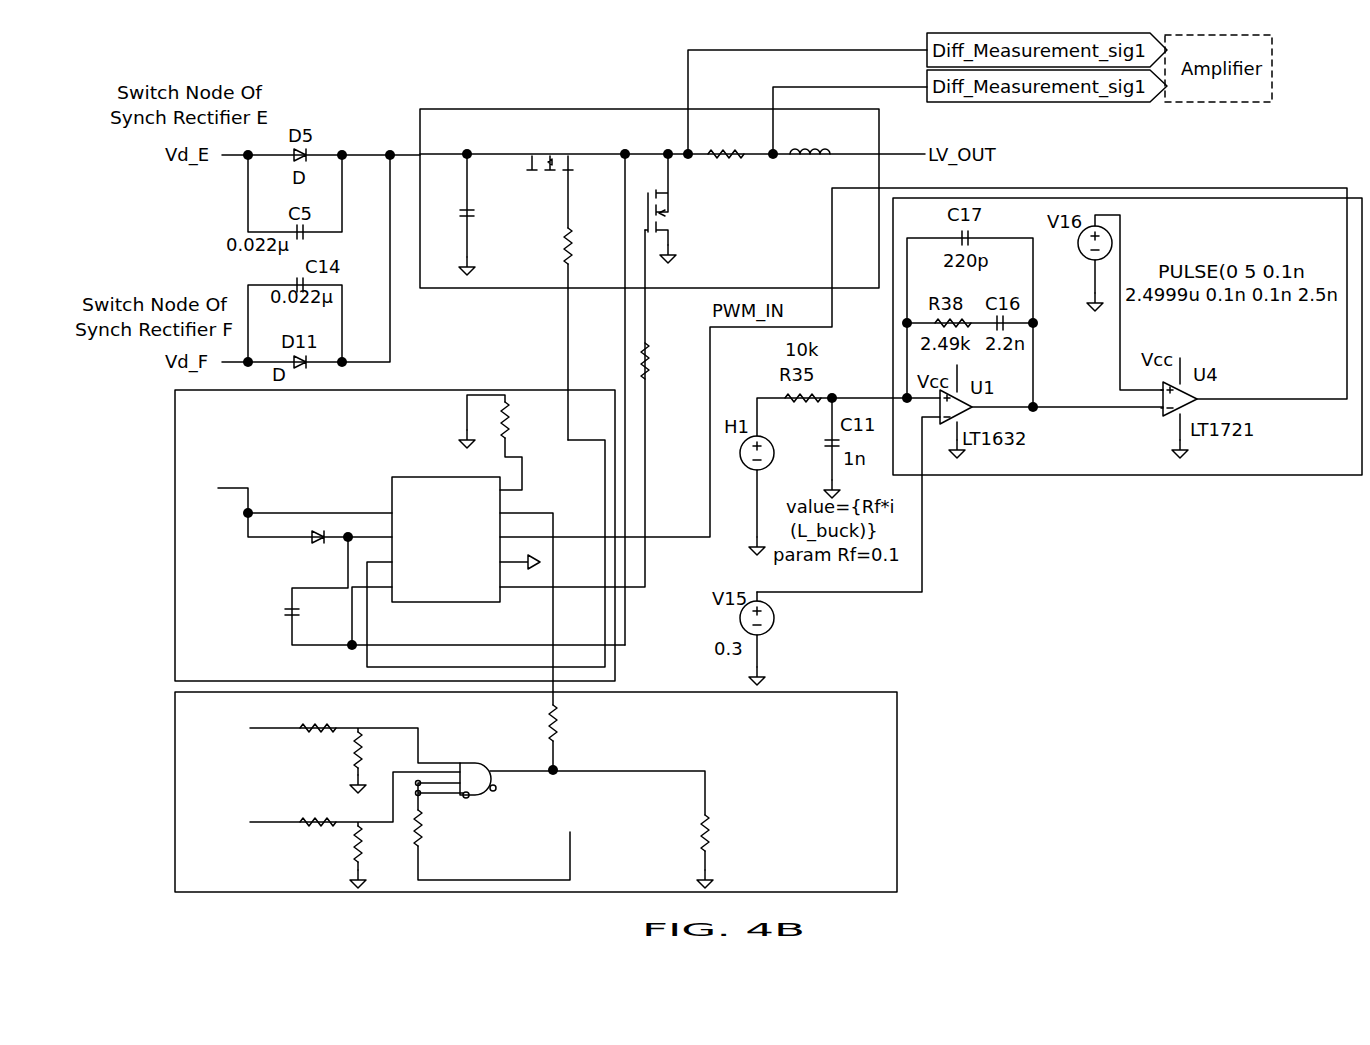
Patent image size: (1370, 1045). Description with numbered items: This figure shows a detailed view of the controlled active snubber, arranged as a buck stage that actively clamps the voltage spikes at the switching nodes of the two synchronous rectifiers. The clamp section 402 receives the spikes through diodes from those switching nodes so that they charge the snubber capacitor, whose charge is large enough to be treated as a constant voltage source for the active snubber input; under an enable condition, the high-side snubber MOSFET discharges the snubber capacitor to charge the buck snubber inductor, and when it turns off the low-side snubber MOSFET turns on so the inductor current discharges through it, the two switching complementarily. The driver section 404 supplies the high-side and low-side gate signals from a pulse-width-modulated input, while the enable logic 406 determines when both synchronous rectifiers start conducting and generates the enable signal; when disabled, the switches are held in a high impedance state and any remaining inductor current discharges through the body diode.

The clamp capacitor voltage / buck snubber power stage 402 is at (650, 109).
The gate driver circuit (LM106_TRANS U2) 404 is at (175, 484).
The enable logic for buck snubber driver 406 is at (828, 692).